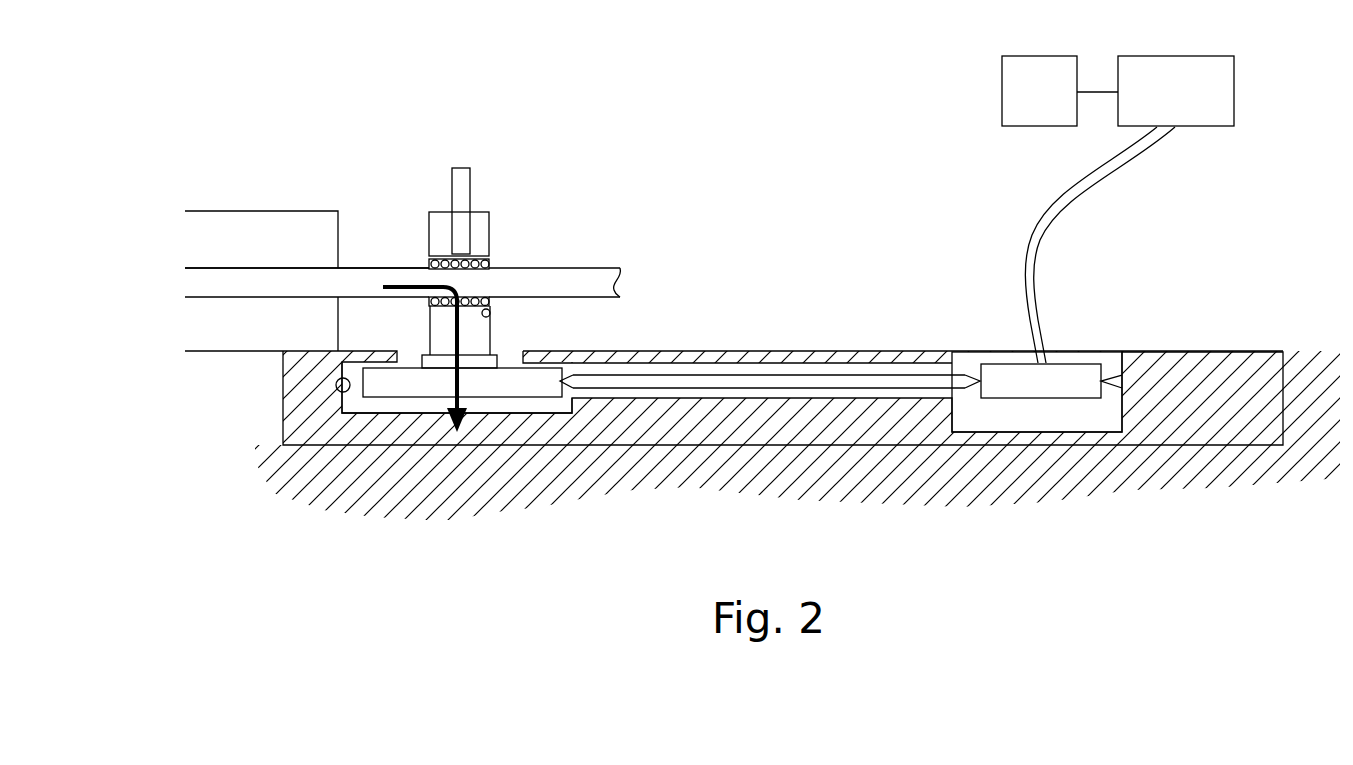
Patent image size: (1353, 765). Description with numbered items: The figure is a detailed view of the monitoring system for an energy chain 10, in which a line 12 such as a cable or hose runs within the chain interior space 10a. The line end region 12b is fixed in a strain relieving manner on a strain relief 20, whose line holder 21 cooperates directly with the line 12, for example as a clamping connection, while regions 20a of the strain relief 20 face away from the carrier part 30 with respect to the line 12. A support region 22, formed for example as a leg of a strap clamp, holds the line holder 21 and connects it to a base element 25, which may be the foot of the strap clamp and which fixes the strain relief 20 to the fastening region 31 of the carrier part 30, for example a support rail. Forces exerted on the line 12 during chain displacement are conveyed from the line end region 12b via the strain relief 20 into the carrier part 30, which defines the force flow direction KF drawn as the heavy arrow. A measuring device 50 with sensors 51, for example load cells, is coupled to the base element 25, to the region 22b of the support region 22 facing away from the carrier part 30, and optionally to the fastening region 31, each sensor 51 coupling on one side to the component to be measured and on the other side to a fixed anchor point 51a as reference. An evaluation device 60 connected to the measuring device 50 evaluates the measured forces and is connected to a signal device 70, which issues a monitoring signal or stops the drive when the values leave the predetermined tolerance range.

The energy chain 10 is at (218, 210).
The chain interior space 10a is at (207, 245).
The line 12 is at (267, 288).
The line end region 12b is at (393, 268).
The strain relief 20 is at (500, 218).
The region of the strain relief 20a is at (477, 222).
The line holder 21 is at (490, 258).
The support region 22 is at (437, 315).
The region of the support region facing away from the carrier part 22b is at (430, 339).
The base element 25 is at (422, 387).
The carrier part 30 is at (488, 428).
The fastening region 31 is at (545, 414).
The measuring device 50 is at (1003, 362).
The sensor 51 is at (493, 313).
The fixed anchor point 51a is at (1120, 377).
The evaluation device 60 is at (1176, 91).
The signal device 70 is at (1039, 91).
The force flow direction KF is at (458, 322).